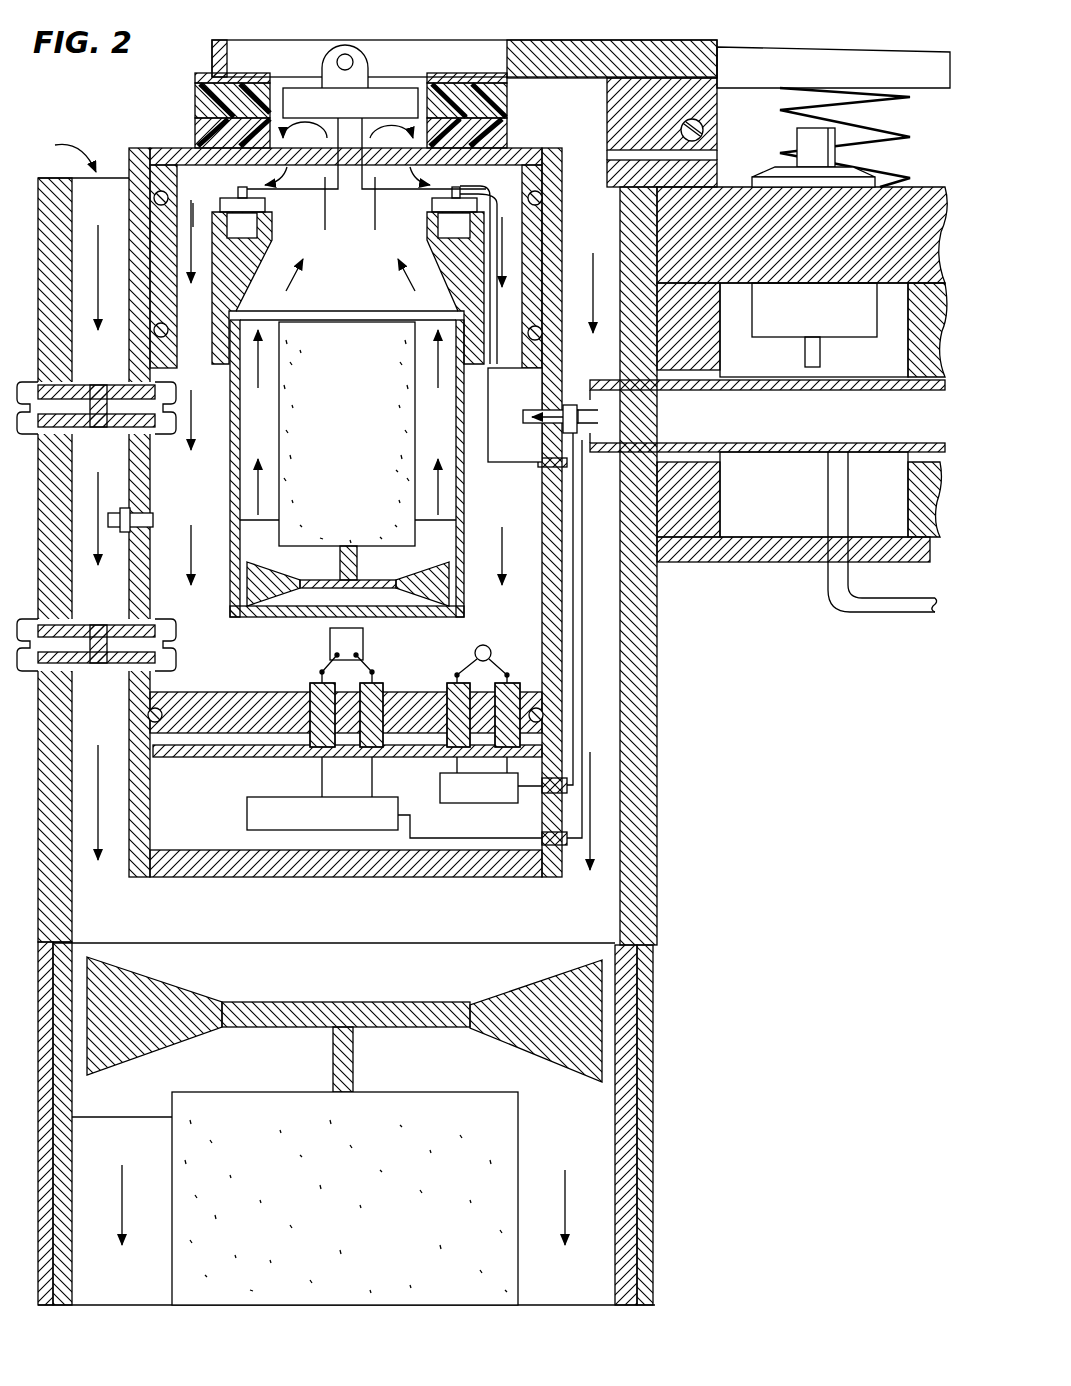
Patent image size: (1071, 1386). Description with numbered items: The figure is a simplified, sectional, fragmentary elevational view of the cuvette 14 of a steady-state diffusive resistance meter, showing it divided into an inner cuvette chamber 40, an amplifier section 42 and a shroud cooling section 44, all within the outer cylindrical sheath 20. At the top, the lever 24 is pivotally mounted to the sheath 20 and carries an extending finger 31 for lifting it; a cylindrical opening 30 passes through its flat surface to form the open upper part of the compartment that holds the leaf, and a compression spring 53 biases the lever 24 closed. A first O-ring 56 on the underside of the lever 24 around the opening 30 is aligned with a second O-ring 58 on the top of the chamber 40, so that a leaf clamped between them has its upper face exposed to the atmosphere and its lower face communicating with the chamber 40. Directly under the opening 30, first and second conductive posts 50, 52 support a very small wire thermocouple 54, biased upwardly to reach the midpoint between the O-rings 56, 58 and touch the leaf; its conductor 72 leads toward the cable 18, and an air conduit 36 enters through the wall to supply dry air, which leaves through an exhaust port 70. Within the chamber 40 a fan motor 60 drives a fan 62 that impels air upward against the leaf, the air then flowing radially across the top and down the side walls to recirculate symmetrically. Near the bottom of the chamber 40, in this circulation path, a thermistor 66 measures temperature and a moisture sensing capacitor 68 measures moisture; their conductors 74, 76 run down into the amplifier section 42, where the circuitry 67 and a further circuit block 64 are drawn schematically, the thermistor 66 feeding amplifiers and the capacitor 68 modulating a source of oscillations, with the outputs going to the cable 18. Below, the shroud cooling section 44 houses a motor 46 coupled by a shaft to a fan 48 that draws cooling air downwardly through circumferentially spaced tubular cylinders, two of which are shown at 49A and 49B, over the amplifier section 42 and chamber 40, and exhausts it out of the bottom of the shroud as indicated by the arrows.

The cuvette 14 is at (416, 1350).
The cable 18 is at (786, 378).
The outer cylindrical sheath 20 is at (660, 839).
The lever 24 is at (183, 60).
The cylindrical opening 30 is at (346, 40).
The extending finger 31 is at (914, 82).
The air conduit 36 is at (528, 410).
The inner cuvette chamber 40 is at (361, 292).
The amplifier section 42 is at (360, 882).
The shroud cooling section 44 is at (660, 1181).
The motor 46 is at (327, 1280).
The fan 48 is at (597, 1018).
The tubular cylinder 49A is at (115, 178).
The tubular cylinder 49B is at (585, 186).
The first conductive post 50 is at (220, 178).
The second conductive post 52 is at (474, 178).
The compression spring 53 is at (893, 176).
The thermocouple 54 is at (350, 113).
The first O-ring 56 is at (503, 102).
The second O-ring 58 is at (503, 129).
The fan motor 60 is at (363, 438).
The fan 62 is at (438, 560).
The control box 64 is at (247, 818).
The thermistor 66 is at (475, 649).
The circuitry 67 is at (493, 804).
The moisture sensing capacitor 68 is at (366, 648).
The exhaust port 70 is at (153, 520).
The conductor 72 is at (490, 342).
The conductor 74 is at (578, 660).
The conductor 76 is at (578, 726).